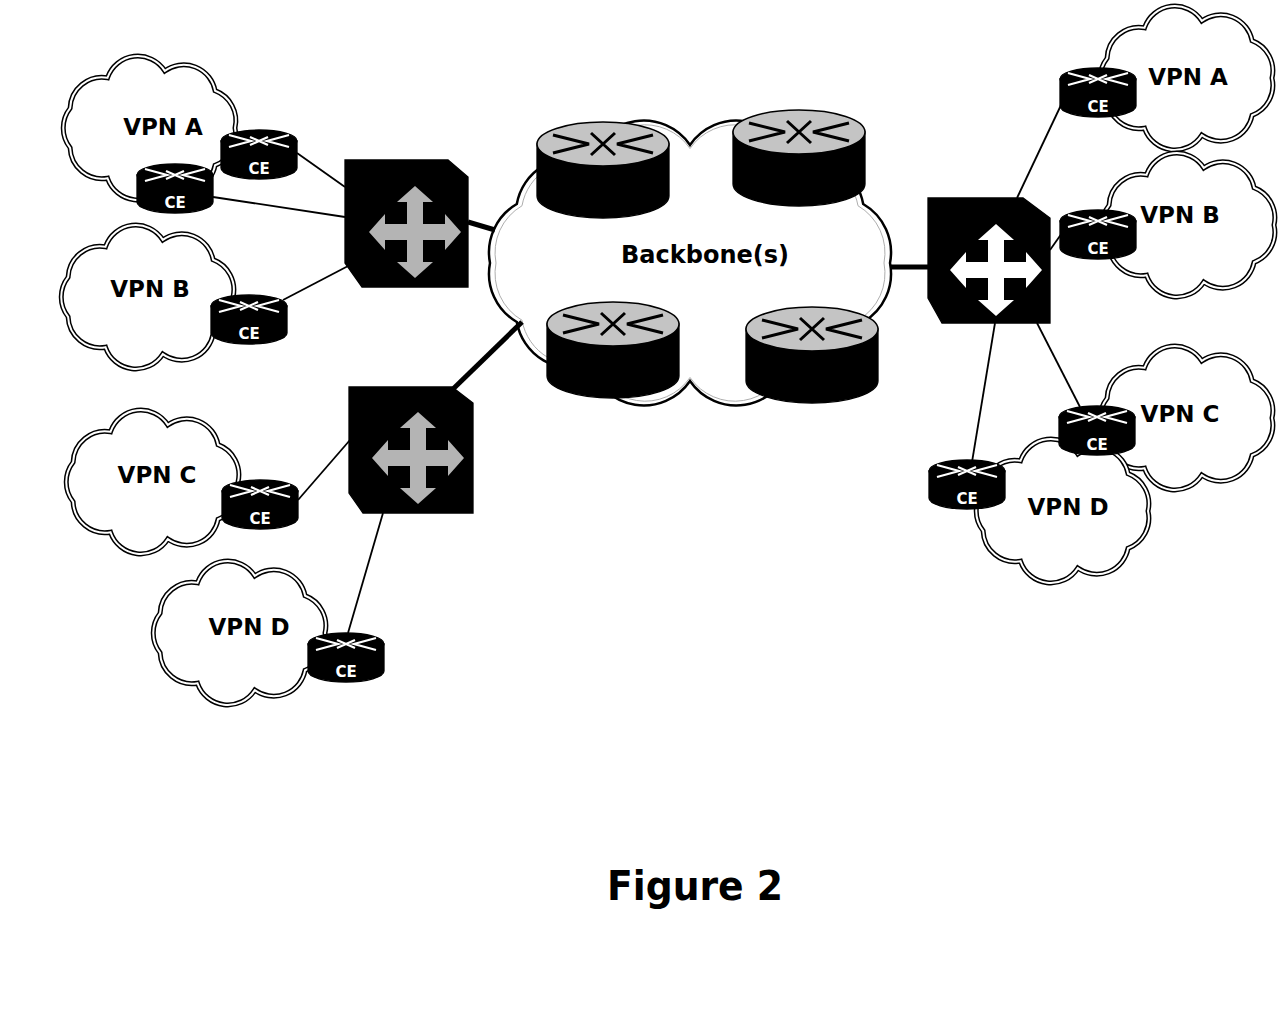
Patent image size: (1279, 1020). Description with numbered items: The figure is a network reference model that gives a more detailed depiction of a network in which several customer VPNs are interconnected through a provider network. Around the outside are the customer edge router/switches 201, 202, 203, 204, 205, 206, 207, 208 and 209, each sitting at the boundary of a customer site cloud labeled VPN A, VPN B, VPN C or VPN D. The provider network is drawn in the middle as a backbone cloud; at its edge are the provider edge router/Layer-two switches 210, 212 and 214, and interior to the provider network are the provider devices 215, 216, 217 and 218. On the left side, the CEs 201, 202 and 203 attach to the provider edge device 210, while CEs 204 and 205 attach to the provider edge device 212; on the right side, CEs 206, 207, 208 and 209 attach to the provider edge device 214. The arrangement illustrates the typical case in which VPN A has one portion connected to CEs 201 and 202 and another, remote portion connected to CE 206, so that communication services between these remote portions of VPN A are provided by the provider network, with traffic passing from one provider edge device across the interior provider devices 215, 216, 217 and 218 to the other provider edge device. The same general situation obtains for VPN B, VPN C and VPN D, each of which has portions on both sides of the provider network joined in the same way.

The customer edge router/switch 201 is at (280, 132).
The customer edge router/switch 202 is at (137, 198).
The customer edge router/switch 203 is at (248, 305).
The customer edge router/switch 204 is at (270, 485).
The customer edge router/switch 205 is at (377, 635).
The customer edge router/switch 206 is at (1062, 73).
The customer edge router/switch 207 is at (1093, 213).
The customer edge router/switch 208 is at (1083, 408).
The customer edge router/switch 209 is at (930, 495).
The provider edge router/Layer-2 switch 210 is at (440, 167).
The provider edge router/Layer-2 switch 212 is at (430, 388).
The provider edge router/Layer-2 switch 214 is at (945, 197).
The provider device 215 is at (630, 122).
The provider device 216 is at (840, 113).
The provider device 217 is at (637, 393).
The provider device 218 is at (772, 393).